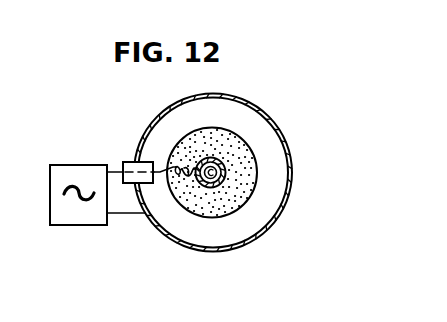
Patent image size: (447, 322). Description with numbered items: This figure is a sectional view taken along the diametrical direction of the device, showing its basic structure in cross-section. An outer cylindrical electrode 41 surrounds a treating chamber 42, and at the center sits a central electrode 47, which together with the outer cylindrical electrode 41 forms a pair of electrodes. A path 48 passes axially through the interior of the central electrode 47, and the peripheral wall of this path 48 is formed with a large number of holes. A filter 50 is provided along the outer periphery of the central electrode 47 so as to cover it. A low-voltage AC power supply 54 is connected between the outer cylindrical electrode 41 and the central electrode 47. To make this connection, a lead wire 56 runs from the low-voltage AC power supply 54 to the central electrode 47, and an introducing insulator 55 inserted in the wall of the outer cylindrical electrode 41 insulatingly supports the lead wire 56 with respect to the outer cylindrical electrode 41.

The outer cylindrical electrode 41 is at (233, 95).
The treating chamber 42 is at (263, 200).
The central electrode 47 is at (220, 187).
The path 48 is at (224, 161).
The filter 50 is at (253, 165).
The low-voltage AC power supply 54 is at (88, 225).
The introducing insulator 55 is at (128, 162).
The lead wire 56 is at (168, 164).